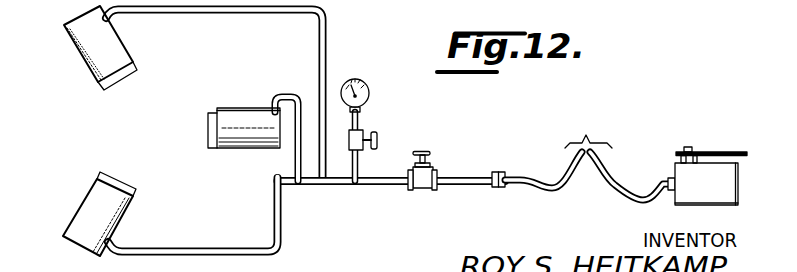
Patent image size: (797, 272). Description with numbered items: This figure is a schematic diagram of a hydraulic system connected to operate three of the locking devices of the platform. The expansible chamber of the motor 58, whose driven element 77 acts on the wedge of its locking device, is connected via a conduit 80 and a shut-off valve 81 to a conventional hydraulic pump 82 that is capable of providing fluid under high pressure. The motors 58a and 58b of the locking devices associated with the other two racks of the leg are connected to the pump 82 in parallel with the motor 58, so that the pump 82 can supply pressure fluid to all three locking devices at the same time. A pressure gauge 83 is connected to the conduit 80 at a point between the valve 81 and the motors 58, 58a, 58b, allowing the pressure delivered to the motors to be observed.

The motor 58 is at (240, 128).
The motor 58a is at (115, 44).
The motor 58b is at (95, 211).
The driven element 77 is at (208, 141).
The conduit 80 is at (333, 184).
The shut-off valve 81 is at (421, 188).
The hydraulic pump 82 is at (682, 197).
The pressure gauge 83 is at (369, 97).